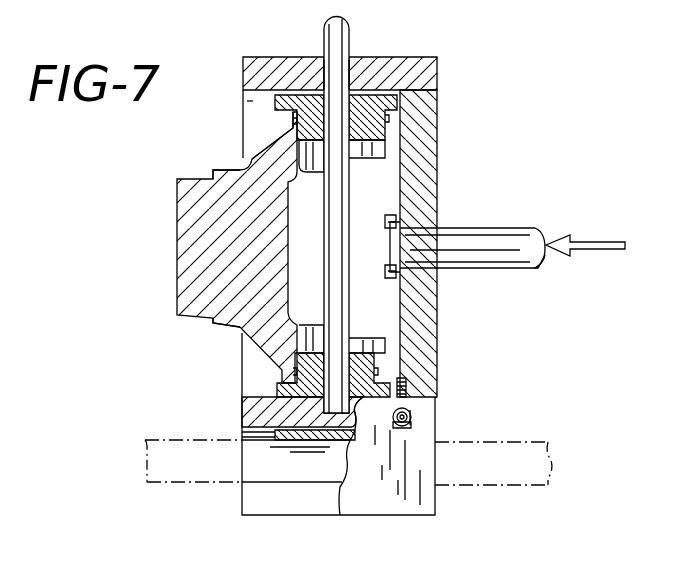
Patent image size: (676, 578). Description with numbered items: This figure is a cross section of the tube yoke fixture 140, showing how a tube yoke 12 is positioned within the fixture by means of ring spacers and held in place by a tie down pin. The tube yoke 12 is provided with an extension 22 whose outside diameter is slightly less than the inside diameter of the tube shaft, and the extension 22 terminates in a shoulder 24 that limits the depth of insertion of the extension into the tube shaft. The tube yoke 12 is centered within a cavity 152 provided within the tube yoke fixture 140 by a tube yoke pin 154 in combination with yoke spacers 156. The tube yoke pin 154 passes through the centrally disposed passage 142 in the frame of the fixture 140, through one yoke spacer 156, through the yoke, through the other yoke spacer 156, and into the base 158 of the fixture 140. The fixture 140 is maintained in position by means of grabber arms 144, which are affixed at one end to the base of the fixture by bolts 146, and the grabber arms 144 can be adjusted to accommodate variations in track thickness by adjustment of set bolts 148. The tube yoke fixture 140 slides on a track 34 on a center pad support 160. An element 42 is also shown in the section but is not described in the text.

The tube yoke fixture 140 is at (516, 101).
The centrally disposed passage 142 is at (324, 78).
The tube yoke pin 154 is at (342, 36).
The yoke spacers 156 is at (392, 104).
The cavity 152 is at (268, 125).
The extension 22 is at (208, 177).
The tube yoke 12 is at (179, 226).
The shoulder 24 is at (213, 326).
The supply pipe 42 is at (518, 232).
The set bolts 148 is at (410, 386).
The bolts 146 is at (437, 430).
The grabber arms 144 is at (437, 470).
The base 158 is at (248, 413).
The center pad support 160 is at (308, 442).
The track 34 is at (552, 495).